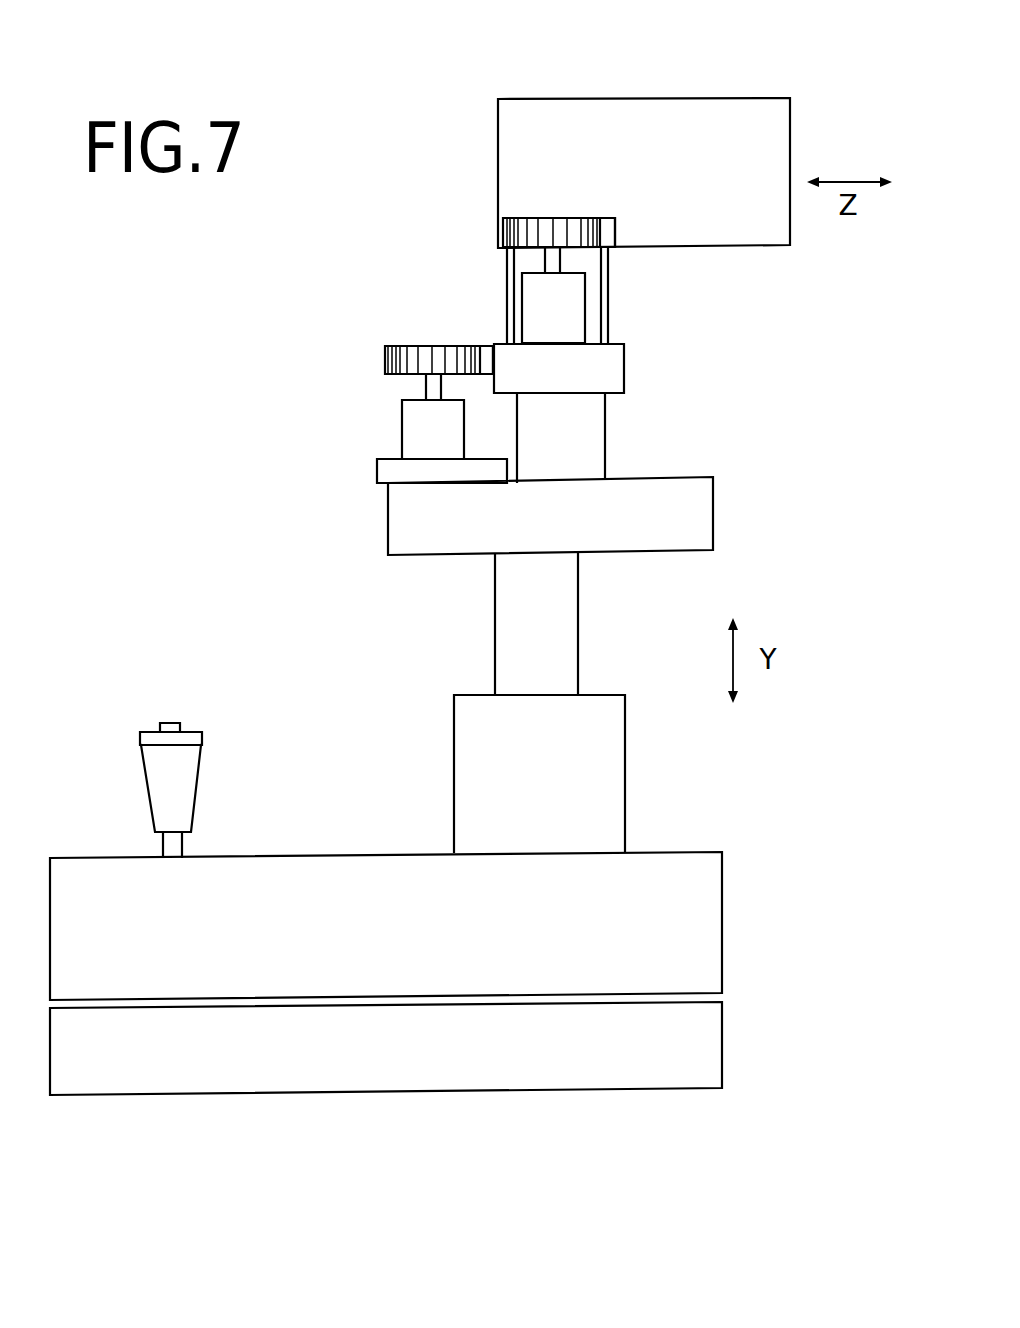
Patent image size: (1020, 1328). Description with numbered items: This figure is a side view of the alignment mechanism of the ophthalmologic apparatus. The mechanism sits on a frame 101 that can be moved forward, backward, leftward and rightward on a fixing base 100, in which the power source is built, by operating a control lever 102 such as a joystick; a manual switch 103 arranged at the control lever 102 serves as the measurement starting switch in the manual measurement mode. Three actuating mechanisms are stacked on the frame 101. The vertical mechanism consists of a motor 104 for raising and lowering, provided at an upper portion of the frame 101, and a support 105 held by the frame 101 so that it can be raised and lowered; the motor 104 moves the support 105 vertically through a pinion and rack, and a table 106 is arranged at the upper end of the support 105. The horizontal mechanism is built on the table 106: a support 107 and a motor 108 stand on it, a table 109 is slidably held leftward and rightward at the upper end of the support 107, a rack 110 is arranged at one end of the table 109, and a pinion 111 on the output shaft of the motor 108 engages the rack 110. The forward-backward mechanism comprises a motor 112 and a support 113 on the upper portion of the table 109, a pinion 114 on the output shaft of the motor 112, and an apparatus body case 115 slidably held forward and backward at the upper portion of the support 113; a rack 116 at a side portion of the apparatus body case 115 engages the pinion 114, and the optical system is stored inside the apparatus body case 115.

The fixing base 100 is at (460, 1064).
The frame 101 is at (713, 932).
The control lever 102 is at (160, 792).
The manual switch 103 is at (168, 722).
The motor 104 is at (472, 780).
The support 105 is at (520, 636).
The table 106 is at (405, 524).
The support 107 is at (600, 425).
The motor 108 is at (415, 430).
The table 109 is at (604, 370).
The rack 110 is at (488, 346).
The pinion 111 is at (410, 346).
The motor 112 is at (570, 323).
The support 113 is at (600, 278).
The pinion 114 is at (532, 218).
The apparatus body case 115 is at (650, 97).
The rack 116 is at (606, 218).